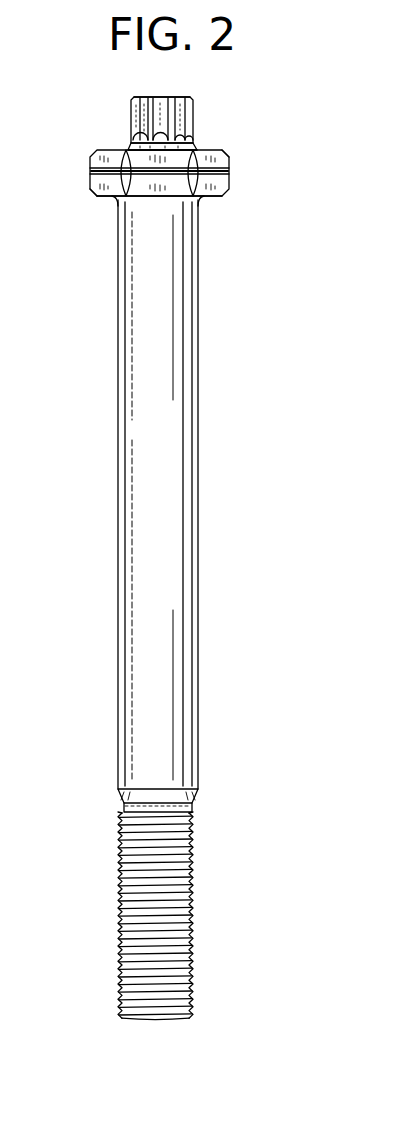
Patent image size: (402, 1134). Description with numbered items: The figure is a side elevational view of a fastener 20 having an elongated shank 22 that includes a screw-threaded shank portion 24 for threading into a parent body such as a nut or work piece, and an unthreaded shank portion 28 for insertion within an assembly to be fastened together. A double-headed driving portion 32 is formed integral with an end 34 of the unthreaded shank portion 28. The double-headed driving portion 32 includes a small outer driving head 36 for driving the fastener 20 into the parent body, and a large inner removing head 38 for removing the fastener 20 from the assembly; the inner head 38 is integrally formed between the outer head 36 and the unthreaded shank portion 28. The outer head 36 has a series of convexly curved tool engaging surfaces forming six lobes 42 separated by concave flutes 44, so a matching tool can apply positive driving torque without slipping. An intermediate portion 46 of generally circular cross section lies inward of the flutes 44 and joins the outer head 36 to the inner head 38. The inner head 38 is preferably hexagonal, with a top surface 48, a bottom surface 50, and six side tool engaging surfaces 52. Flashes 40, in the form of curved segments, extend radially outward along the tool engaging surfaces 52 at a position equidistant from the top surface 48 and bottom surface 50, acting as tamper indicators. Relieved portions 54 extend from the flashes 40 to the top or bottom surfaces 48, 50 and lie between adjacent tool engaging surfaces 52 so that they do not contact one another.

The fastener 20 is at (98, 381).
The elongated shank 22 is at (115, 713).
The screw-threaded shank portion 24 is at (190, 905).
The unthreaded shank portion 28 is at (199, 310).
The double-headed driving portion 32 is at (210, 126).
The end of the unthreaded shank portion 34 is at (204, 197).
The small outer driving head 36 is at (192, 97).
The large inner removing head 38 is at (222, 183).
The flashes 40 is at (100, 171).
The lobes 42 is at (146, 110).
The flutes 44 is at (160, 96).
The intermediate portion 46 is at (131, 147).
The top surface 48 is at (207, 150).
The bottom surface 50 is at (104, 197).
The side tool engaging surfaces 52 is at (170, 200).
The relieved portions 54 is at (128, 200).